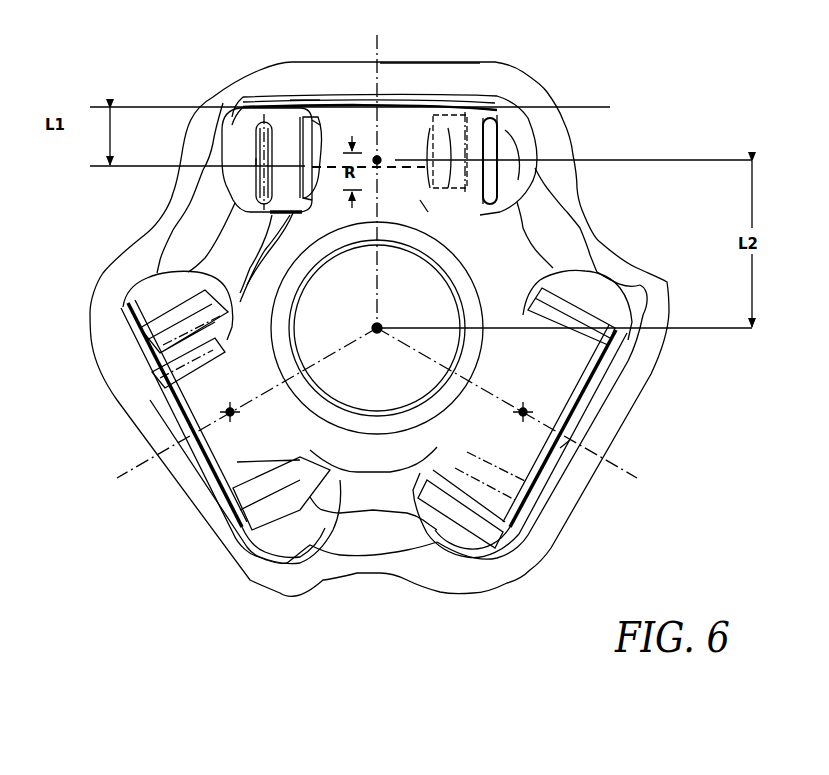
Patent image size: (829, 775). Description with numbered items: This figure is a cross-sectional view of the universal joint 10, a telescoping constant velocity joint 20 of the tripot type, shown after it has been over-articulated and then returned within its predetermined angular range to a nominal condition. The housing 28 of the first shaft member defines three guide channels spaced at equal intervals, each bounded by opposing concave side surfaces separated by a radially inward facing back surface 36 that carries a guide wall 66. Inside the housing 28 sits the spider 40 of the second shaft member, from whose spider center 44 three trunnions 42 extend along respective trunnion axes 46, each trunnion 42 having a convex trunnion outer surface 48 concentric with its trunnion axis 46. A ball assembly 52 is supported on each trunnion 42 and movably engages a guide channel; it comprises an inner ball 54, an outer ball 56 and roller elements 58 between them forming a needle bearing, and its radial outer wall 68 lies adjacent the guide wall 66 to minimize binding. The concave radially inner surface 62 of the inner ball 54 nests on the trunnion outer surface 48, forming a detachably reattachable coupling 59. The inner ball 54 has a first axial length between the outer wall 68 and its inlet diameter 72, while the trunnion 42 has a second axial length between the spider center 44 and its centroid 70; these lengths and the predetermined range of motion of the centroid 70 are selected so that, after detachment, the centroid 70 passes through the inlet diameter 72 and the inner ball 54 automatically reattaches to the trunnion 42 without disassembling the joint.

The universal joint 10 is at (650, 138).
The constant velocity joint 20 is at (637, 250).
The housing 28 is at (597, 215).
The back surface 36 is at (550, 457).
The spider 40 is at (232, 240).
The trunnion 42 is at (205, 397).
The spider center 44 is at (372, 325).
The trunnion axis 46 is at (380, 52).
The trunnion outer surface 48 is at (258, 160).
The ball assembly 52 is at (512, 108).
The inner ball 54 is at (535, 176).
The outer ball 56 is at (517, 151).
The roller elements 58 is at (497, 132).
The detachably reattachable coupling 59 is at (481, 125).
The radially inner surface 62 is at (313, 125).
The guide wall 66 is at (415, 75).
The radial outer wall 68 is at (300, 100).
The centroid 70 is at (383, 168).
The inlet diameter 72 is at (423, 207).